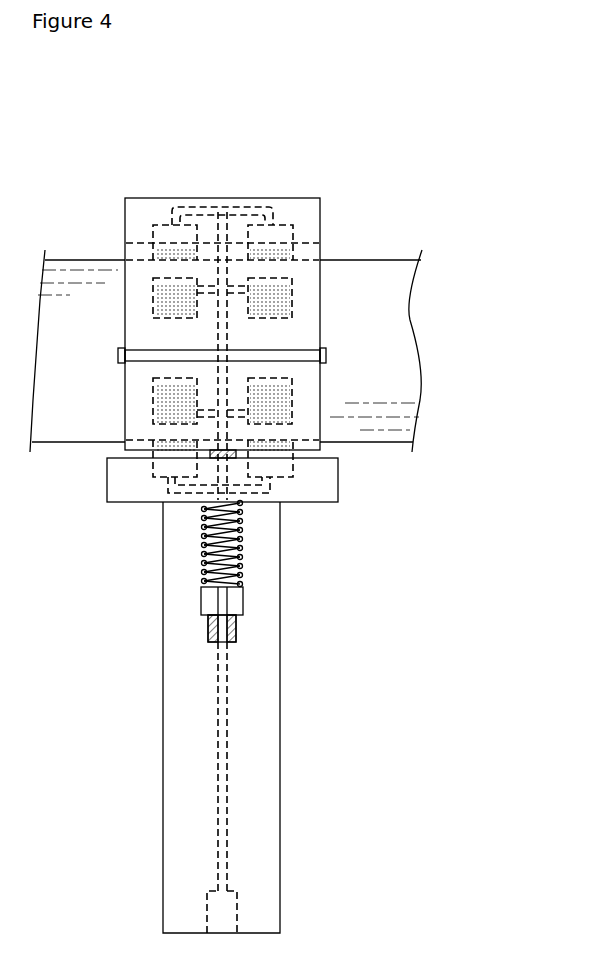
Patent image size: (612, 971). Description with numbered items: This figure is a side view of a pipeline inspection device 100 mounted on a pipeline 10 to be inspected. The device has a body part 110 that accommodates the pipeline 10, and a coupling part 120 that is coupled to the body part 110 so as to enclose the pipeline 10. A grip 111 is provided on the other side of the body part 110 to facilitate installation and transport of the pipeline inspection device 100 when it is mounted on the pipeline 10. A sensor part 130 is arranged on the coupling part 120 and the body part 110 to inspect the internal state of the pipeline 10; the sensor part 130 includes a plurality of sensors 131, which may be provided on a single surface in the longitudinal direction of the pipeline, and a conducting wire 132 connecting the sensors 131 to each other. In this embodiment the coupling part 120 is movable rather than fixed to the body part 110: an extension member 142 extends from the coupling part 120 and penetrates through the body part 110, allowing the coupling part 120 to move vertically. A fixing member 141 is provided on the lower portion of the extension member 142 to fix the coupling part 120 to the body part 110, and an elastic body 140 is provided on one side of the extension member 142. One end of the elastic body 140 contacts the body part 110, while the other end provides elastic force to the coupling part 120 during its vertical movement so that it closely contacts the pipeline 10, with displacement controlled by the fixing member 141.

The pipeline 10 is at (365, 355).
The pipeline inspection device 100 is at (372, 510).
The body part 110 is at (325, 478).
The grip 111 is at (270, 742).
The coupling part 120 is at (322, 222).
The sensor part 130 is at (297, 112).
The sensor 131 is at (283, 232).
The conducting wire 132 is at (206, 208).
The elastic body 140 is at (245, 545).
The fixing member 141 is at (245, 605).
The extension member 142 is at (240, 637).